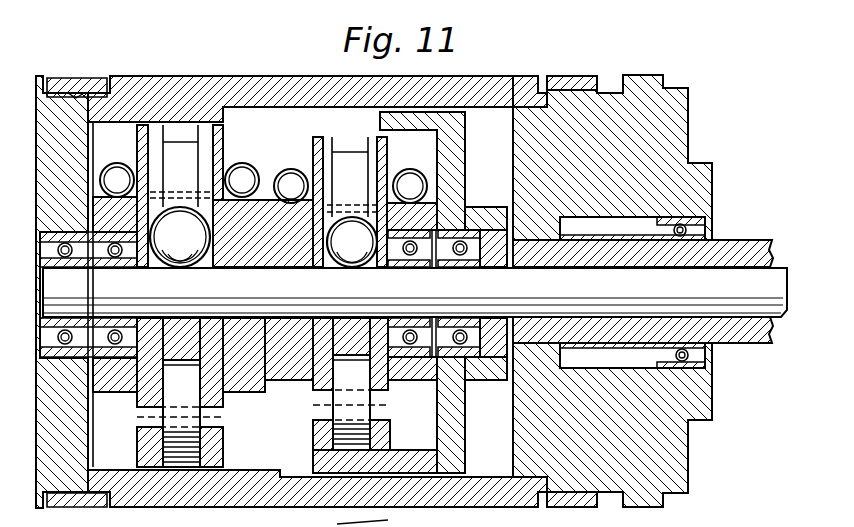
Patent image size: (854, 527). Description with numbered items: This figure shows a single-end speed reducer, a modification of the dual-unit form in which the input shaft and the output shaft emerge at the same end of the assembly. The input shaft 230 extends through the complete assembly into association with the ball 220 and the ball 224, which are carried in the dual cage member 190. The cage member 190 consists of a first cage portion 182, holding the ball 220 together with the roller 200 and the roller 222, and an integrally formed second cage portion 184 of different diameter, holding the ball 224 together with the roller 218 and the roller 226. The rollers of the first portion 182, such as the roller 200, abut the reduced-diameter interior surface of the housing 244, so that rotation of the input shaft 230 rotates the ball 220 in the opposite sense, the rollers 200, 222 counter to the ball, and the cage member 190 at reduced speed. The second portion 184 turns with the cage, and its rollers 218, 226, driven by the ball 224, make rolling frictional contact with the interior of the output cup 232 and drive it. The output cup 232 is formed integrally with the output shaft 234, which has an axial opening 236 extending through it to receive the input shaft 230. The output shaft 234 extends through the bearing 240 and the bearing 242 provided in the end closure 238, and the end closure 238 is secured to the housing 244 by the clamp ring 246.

The first cage member portion 182 is at (236, 142).
The second cage member portion 184 is at (502, 97).
The dual cage member 190 is at (285, 378).
The roller 200 is at (200, 452).
The roller 218 is at (223, 430).
The ball 220 is at (182, 203).
The roller 222 is at (168, 142).
The ball 224 is at (312, 186).
The roller 226 is at (355, 166).
The input shaft 230 is at (748, 305).
The output cup 232 is at (442, 117).
The output shaft 234 is at (755, 243).
The axial opening 236 is at (714, 335).
The end closure 238 is at (690, 123).
The bearing 240 is at (527, 217).
The bearing 242 is at (682, 220).
The housing 244 is at (250, 76).
The clamp ring 246 is at (572, 76).